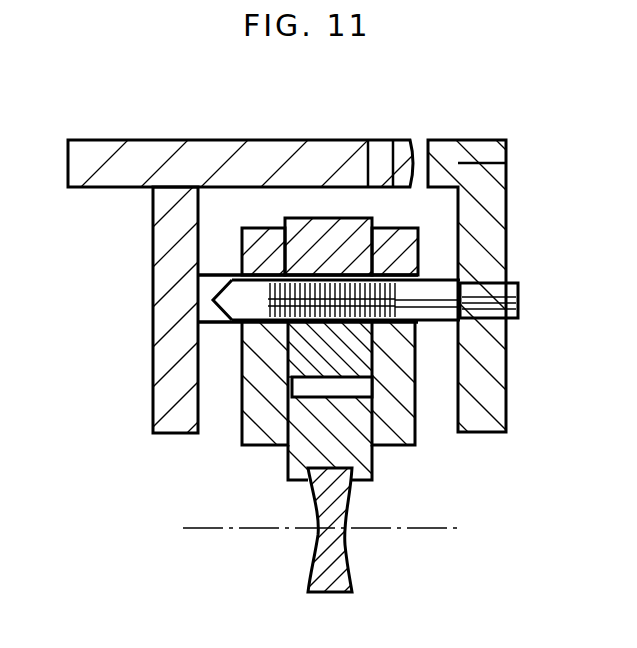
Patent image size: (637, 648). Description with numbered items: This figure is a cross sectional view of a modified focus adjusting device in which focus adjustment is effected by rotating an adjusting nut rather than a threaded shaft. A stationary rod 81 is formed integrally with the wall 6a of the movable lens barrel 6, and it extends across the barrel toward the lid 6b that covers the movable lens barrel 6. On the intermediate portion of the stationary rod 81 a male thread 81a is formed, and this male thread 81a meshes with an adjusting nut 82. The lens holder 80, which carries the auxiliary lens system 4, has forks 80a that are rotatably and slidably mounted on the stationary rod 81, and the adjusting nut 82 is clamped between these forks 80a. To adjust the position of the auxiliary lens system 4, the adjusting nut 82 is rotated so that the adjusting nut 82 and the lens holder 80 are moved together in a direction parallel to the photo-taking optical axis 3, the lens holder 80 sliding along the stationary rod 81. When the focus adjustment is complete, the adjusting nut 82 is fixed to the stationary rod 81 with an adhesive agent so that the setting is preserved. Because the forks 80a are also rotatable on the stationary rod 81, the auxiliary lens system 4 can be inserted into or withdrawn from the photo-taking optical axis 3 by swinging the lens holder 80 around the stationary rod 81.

The photo-taking optical axis 3 is at (272, 528).
The auxiliary lens system 4 is at (352, 571).
The movable lens barrel 6 is at (128, 152).
The wall 6a is at (165, 243).
The lid 6b is at (492, 245).
The lens holder 80 is at (360, 457).
The forks 80a is at (255, 363).
The stationary rod 81 is at (437, 295).
The male thread 81a is at (351, 278).
The adjusting nut 82 is at (310, 233).